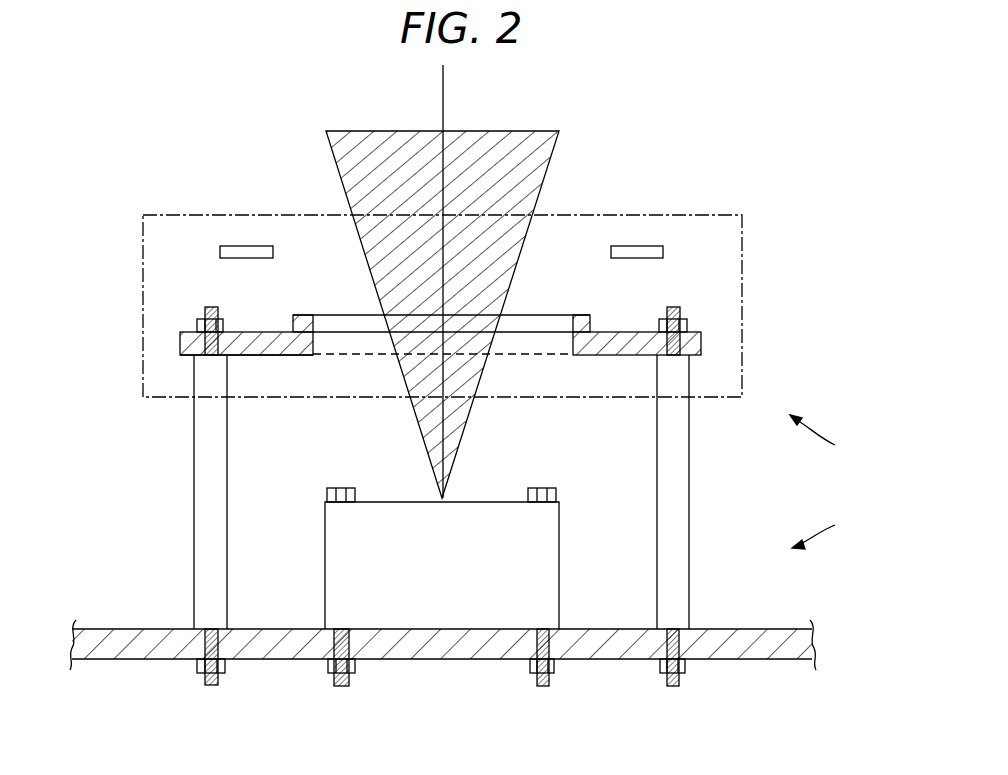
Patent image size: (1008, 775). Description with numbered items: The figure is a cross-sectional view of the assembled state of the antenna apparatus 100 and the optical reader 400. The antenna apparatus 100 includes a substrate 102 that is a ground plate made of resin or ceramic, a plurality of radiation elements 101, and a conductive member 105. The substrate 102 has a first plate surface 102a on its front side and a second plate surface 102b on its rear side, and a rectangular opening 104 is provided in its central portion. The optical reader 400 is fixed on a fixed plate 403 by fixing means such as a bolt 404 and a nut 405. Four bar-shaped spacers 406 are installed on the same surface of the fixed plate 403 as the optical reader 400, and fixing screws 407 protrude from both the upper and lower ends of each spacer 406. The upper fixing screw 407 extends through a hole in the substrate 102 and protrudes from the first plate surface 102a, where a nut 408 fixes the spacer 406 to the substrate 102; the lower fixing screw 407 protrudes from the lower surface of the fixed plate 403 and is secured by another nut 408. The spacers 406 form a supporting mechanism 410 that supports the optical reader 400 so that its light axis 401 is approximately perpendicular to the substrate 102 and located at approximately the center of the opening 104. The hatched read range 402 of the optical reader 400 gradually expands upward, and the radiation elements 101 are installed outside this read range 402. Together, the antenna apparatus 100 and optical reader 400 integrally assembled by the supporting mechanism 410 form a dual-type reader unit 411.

The antenna apparatus 100 is at (742, 228).
The radiation element 101 is at (248, 246).
The substrate 102 is at (489, 336).
The first plate surface 102a is at (247, 331).
The second plate surface 102b is at (243, 355).
The opening 104 is at (342, 340).
The conductive member 105 is at (579, 315).
The optical reader 400 is at (557, 563).
The light axis 401 is at (443, 92).
The read range 402 is at (540, 160).
The fixed plate 403 is at (758, 663).
The bolt 404 is at (547, 488).
The nut 405 is at (530, 665).
The spacer 406 is at (193, 469).
The fixing screw 407 is at (674, 307).
The nut 408 is at (688, 327).
The supporting mechanism 410 is at (823, 523).
The dual-type reader unit 411 is at (822, 443).